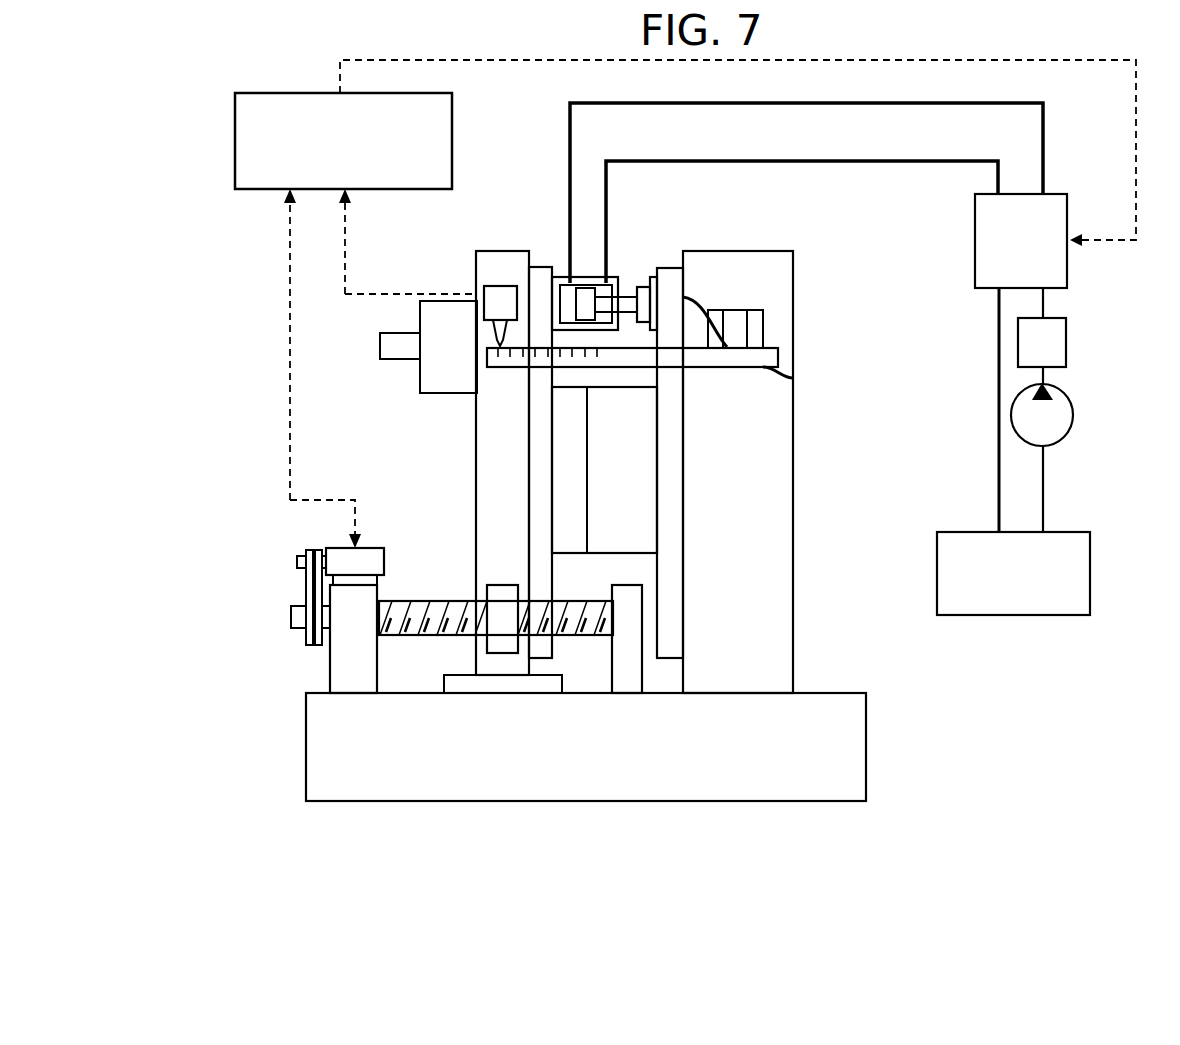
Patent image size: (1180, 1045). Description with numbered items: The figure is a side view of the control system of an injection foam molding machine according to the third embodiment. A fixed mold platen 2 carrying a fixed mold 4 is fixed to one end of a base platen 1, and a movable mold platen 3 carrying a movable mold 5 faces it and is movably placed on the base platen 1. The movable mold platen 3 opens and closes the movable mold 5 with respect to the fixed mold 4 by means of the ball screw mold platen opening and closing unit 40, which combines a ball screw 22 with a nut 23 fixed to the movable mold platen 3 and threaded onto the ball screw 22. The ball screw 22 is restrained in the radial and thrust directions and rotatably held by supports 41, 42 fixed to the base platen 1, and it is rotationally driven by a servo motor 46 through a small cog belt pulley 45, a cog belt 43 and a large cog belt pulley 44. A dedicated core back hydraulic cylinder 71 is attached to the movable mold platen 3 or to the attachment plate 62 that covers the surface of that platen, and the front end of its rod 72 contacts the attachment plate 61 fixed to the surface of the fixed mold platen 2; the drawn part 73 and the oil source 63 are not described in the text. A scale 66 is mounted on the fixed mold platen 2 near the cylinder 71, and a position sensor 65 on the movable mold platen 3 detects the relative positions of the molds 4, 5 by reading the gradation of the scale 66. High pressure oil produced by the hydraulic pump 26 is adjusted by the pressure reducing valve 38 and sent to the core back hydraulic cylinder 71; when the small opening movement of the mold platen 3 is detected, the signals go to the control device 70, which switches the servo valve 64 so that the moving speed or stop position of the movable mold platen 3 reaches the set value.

The base platen 1 is at (866, 748).
The fixed mold platen 2 is at (793, 603).
The movable mold platen 3 is at (474, 252).
The fixed mold 4 is at (638, 473).
The movable mold 5 is at (573, 532).
The ball screw 22 is at (452, 636).
The nut 23 is at (483, 650).
The hydraulic pump 26 is at (1074, 415).
The pressure reducing valve 38 is at (1068, 343).
The ball screw mold platen opening and closing unit 40 is at (319, 667).
The support 41 is at (612, 658).
The support 42 is at (328, 673).
The cog belt 43 is at (308, 588).
The large cog belt pulley 44 is at (302, 635).
The small cog belt pulley 45 is at (305, 553).
The servo motor 46 is at (370, 548).
The attachment plate 61 is at (668, 660).
The attachment plate 62 is at (540, 660).
The oil source 63 is at (1091, 575).
The servo valve 64 is at (1052, 194).
The position sensor 65 is at (497, 290).
The scale 66 is at (723, 368).
The control device 70 is at (235, 137).
The core back hydraulic cylinder 71 is at (562, 283).
The rod 72 is at (627, 290).
The coupling plate 73 is at (652, 273).